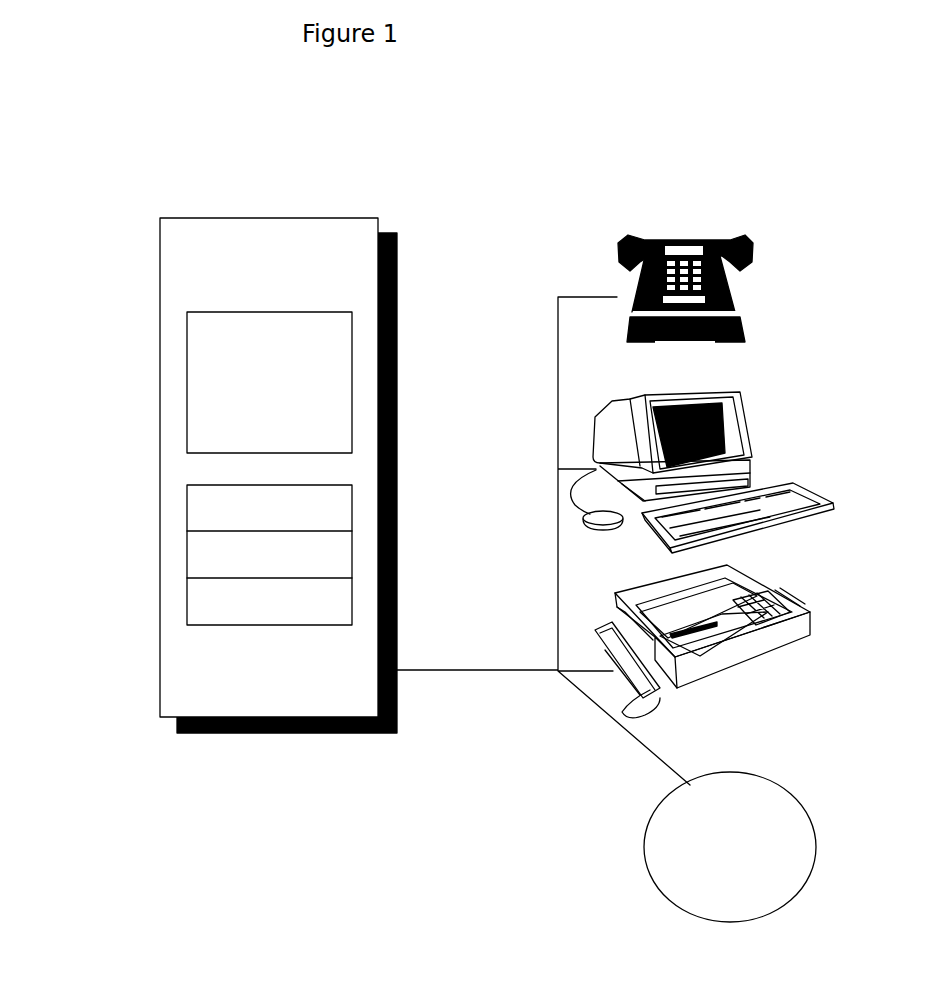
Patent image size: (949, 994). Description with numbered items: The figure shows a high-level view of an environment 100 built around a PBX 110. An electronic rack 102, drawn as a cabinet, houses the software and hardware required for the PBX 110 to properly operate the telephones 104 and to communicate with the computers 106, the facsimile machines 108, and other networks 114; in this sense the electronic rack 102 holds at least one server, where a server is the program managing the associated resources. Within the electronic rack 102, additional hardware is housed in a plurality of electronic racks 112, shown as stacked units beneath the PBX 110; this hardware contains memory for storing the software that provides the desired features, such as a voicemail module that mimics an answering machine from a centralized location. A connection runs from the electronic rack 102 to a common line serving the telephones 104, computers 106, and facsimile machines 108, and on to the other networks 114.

The environment 100 is at (412, 765).
The electronic rack 102 is at (268, 218).
The telephones 104 is at (735, 297).
The computers 106 is at (752, 424).
The facsimile machines 108 is at (812, 624).
The PBX 110 is at (187, 375).
The electronic racks 112 is at (187, 600).
The other networks 114 is at (792, 792).